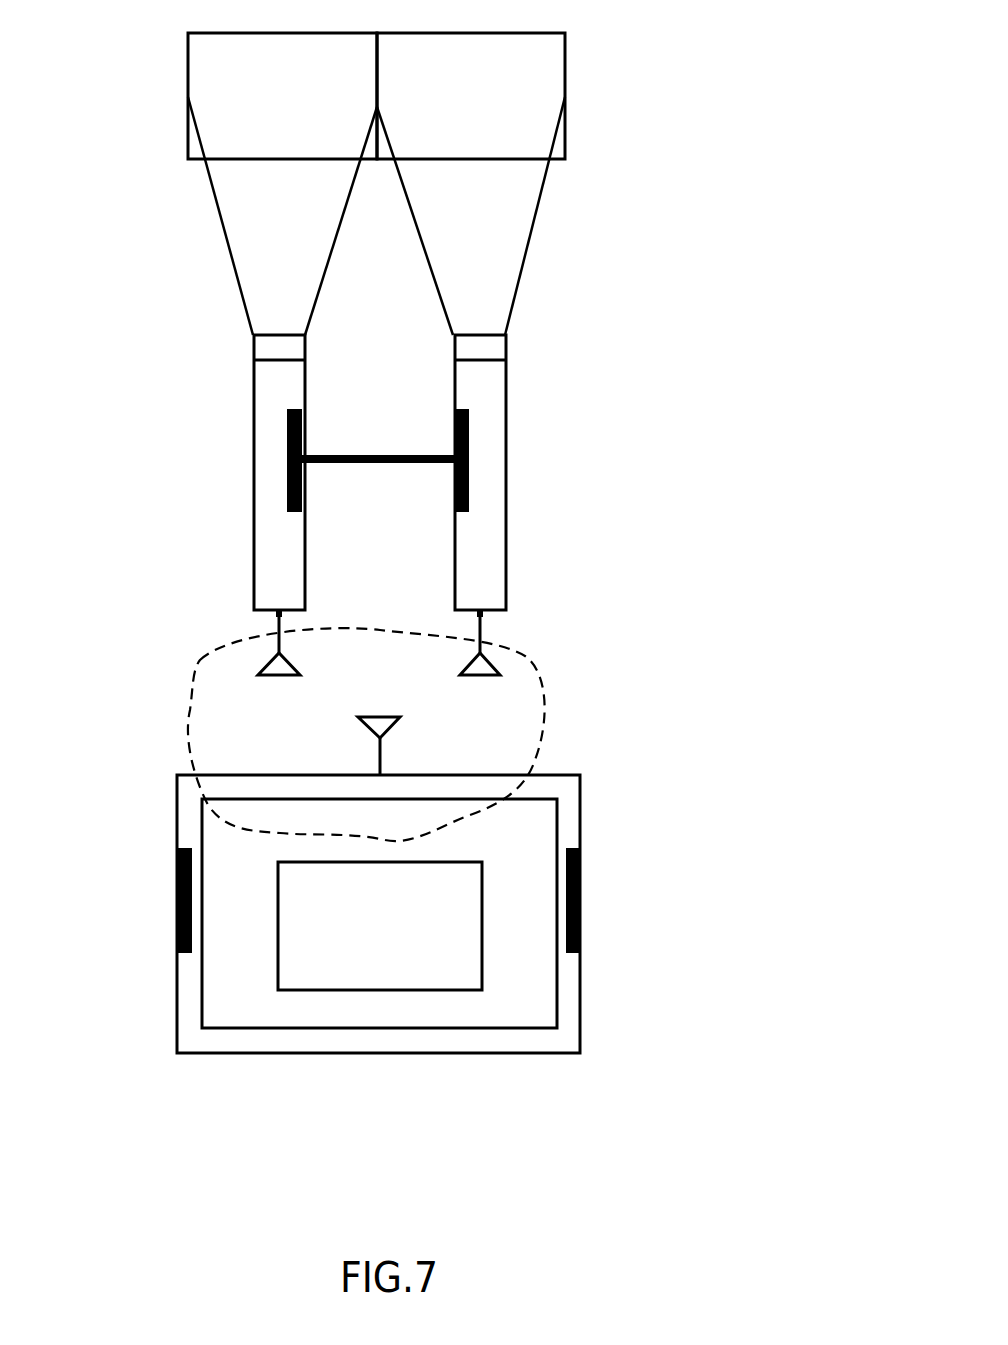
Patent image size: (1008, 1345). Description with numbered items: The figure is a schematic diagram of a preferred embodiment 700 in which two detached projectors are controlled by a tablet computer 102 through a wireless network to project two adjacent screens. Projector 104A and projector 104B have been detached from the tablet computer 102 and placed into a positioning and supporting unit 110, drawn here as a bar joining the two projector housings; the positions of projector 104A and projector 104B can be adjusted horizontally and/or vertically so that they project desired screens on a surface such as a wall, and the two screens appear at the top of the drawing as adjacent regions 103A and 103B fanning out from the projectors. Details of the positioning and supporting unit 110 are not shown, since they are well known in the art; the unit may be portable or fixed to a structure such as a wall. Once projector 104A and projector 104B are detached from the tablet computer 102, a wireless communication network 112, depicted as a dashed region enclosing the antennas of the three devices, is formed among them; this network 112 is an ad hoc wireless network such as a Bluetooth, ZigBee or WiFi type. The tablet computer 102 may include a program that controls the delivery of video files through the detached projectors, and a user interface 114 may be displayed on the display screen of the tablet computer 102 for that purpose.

The preferred embodiment 700 is at (690, 150).
The first field of view / projection region 103A is at (282, 184).
The second field of view / projection region 103B is at (471, 184).
The projector 104A is at (253, 397).
The projector 104B is at (507, 372).
The positioning and supporting unit 110 is at (402, 455).
The wireless communication network 112 is at (553, 702).
The tablet computer 102 is at (177, 812).
The user interface 114 is at (380, 926).